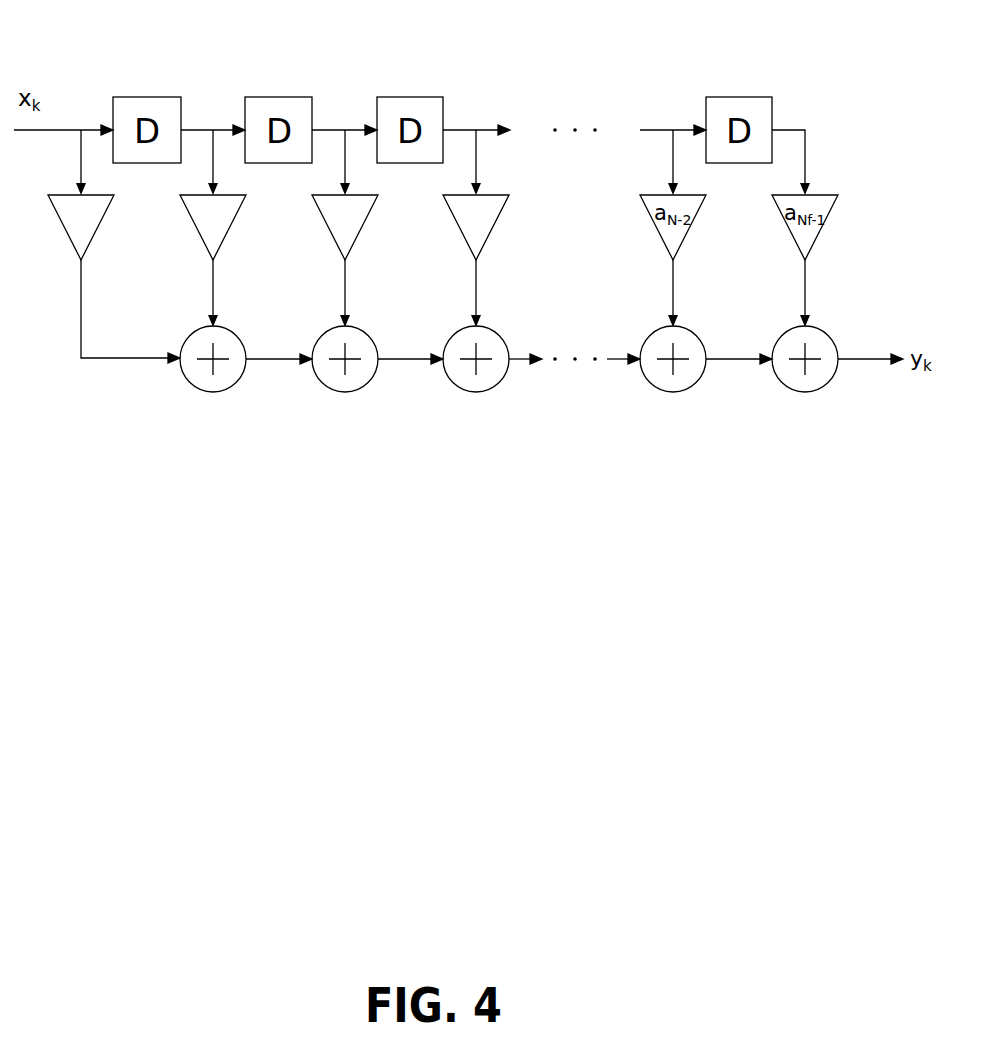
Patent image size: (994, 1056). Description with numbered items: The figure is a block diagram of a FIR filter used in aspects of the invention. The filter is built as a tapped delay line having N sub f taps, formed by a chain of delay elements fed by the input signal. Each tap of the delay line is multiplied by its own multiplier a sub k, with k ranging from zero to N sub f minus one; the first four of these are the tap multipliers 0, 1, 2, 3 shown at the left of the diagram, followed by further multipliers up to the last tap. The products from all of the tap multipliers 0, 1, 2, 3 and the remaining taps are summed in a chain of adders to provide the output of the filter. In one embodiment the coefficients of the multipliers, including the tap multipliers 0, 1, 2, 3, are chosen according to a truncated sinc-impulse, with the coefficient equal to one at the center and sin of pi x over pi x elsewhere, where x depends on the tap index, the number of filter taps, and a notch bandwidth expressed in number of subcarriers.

The tap multiplier 0 is at (81, 227).
The tap multiplier 1 is at (213, 227).
The tap multiplier 2 is at (345, 227).
The tap multiplier 3 is at (476, 227).